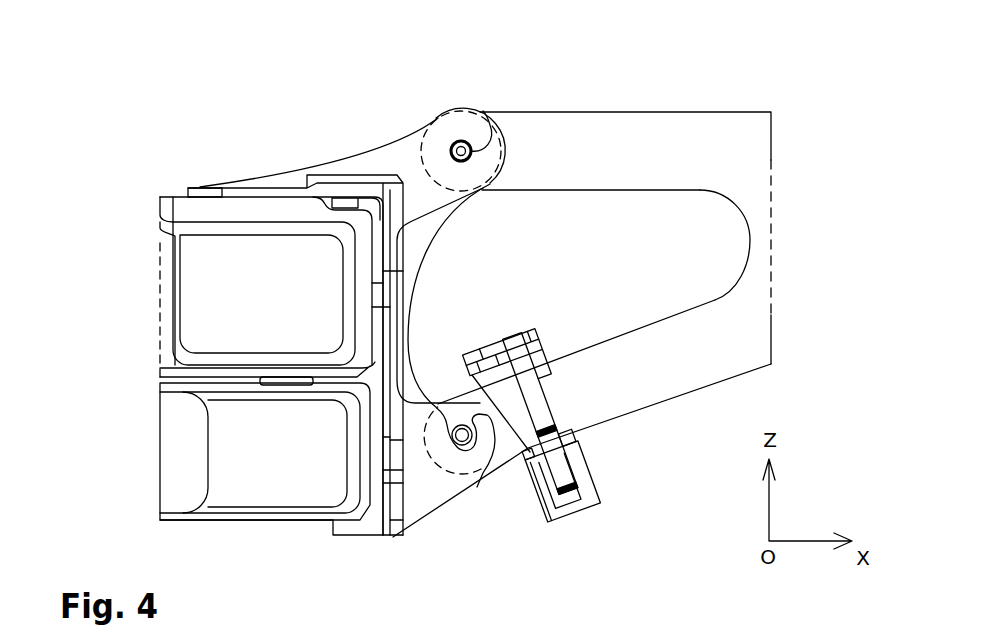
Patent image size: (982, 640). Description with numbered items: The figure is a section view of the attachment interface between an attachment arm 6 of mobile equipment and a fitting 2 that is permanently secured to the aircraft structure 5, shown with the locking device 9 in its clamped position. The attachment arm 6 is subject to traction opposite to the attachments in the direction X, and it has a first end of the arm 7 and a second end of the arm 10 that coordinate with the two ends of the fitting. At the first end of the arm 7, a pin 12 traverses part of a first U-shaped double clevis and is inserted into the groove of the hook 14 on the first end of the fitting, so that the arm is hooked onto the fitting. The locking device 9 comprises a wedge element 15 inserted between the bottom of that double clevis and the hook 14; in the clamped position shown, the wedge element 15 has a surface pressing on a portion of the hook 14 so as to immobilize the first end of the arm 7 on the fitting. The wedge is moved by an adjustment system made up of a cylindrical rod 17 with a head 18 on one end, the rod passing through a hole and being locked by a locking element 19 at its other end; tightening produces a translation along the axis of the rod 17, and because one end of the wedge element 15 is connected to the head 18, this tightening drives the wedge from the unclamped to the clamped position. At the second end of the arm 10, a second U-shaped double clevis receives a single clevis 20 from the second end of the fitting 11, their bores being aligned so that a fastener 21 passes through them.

The fitting 2 is at (373, 145).
The aircraft structure 5 is at (240, 520).
The attachment arm 6 is at (760, 221).
The first end of the arm 7 is at (657, 408).
The locking device 9 is at (565, 521).
The second end of the arm 10 is at (575, 111).
The second end of the fitting 11 is at (420, 125).
The pin 12 is at (478, 446).
The hook 14 is at (523, 451).
The wedge element 15 is at (437, 406).
The cylindrical rod 17 is at (542, 405).
The head 18 is at (485, 352).
The locking element 19 is at (593, 484).
The single clevis 20 is at (483, 162).
The fastener 21 is at (486, 118).